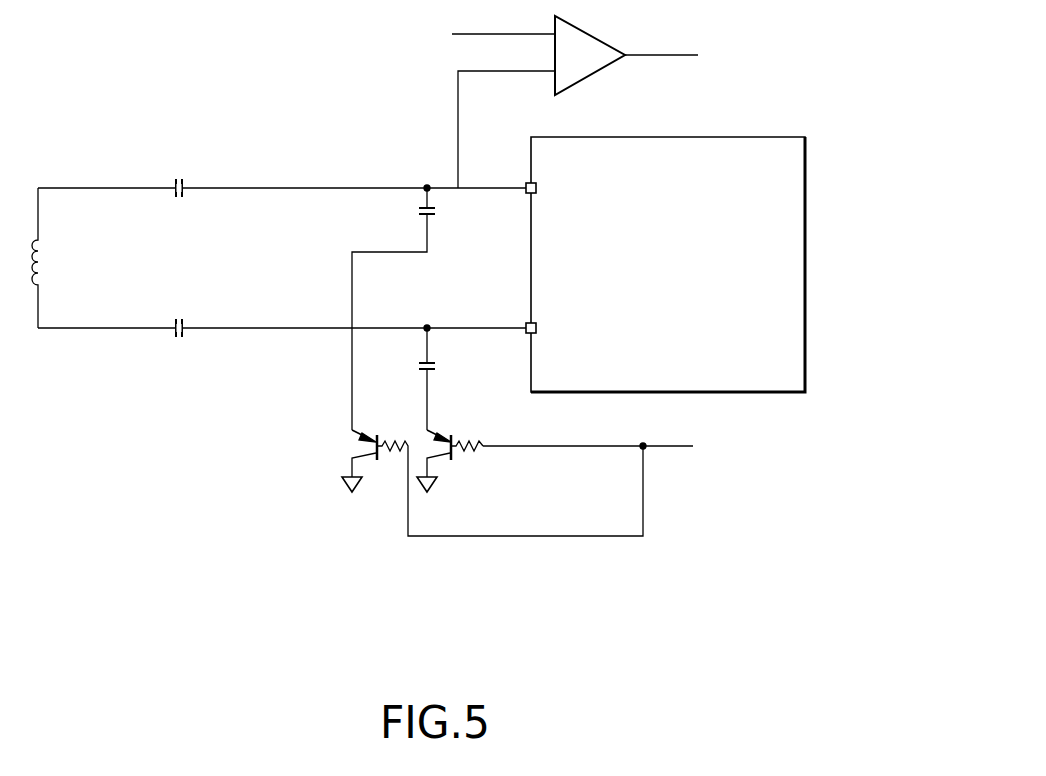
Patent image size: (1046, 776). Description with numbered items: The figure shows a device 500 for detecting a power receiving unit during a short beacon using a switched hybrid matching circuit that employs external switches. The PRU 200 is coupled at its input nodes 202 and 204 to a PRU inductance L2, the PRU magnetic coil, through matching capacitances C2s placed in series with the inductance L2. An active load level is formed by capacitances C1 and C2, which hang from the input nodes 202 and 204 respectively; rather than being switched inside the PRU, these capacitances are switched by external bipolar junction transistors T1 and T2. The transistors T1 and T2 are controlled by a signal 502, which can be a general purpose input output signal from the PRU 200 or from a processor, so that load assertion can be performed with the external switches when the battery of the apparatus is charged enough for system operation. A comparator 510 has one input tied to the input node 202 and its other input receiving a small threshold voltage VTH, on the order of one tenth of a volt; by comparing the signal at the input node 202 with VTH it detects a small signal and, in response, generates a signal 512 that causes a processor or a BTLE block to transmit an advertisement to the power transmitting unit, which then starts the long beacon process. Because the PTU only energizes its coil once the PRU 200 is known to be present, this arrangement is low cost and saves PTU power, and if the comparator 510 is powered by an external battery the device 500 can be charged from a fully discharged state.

The device 500 is at (130, 86).
The comparator 510 is at (594, 68).
The signal 512 is at (650, 54).
The PRU 200 is at (700, 293).
The input node 202 is at (538, 188).
The input node 204 is at (538, 328).
The signal 502 is at (608, 447).
The PRU inductance L2 is at (51, 258).
The matching capacitances C2s is at (185, 241).
The capacitance C1 is at (410, 307).
The capacitance C2 is at (443, 377).
The bipolar junction transistor T1 is at (492, 466).
The bipolar junction transistor T2 is at (450, 444).
The threshold voltage VTH is at (430, 32).